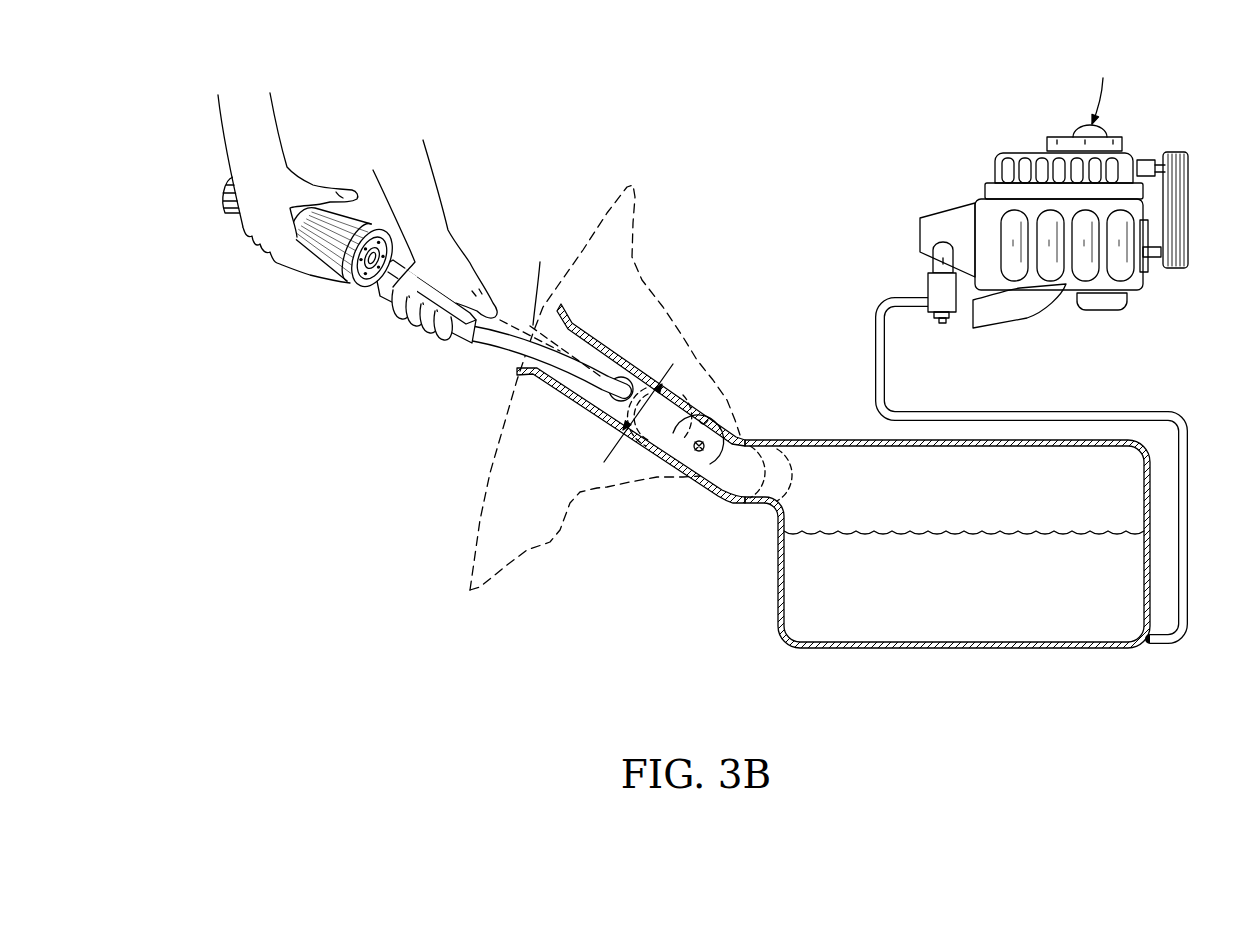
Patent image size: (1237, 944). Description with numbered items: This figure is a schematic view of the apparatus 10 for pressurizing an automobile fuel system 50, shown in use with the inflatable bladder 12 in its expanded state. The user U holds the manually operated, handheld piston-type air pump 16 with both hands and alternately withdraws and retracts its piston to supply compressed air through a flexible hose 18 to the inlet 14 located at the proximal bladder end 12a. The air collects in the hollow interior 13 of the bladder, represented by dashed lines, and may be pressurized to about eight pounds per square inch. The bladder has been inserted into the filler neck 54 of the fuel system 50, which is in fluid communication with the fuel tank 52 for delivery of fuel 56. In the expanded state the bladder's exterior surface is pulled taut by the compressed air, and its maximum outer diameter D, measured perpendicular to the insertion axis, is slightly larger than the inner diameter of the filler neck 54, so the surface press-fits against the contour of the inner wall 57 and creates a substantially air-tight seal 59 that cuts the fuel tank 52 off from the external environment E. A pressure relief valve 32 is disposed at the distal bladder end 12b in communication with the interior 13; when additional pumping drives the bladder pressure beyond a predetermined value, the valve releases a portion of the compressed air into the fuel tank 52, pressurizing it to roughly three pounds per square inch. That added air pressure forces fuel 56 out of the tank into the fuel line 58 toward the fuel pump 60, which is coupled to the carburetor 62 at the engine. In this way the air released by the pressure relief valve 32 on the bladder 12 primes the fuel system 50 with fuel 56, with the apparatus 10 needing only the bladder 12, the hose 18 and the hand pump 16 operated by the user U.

The apparatus 10 is at (516, 305).
The inflatable bladder 12 is at (657, 458).
The proximal bladder end 12a is at (645, 370).
The distal bladder end 12b is at (752, 440).
The hollow interior 13 is at (688, 470).
The inlet 14 is at (613, 405).
The air pump 16 is at (360, 290).
The hose 18 is at (565, 350).
The pressure relief valve 32 is at (703, 453).
The fuel system 50 is at (1182, 136).
The fuel tank 52 is at (826, 652).
The filler neck 54 is at (684, 385).
The fuel 56 is at (1062, 628).
The inner wall 57 is at (712, 426).
The fuel line 58 is at (1153, 411).
The substantially air-tight seal 59 is at (660, 444).
The fuel pump 60 is at (947, 298).
The carburetor 62 is at (1043, 139).
The user U is at (324, 224).
The external environment E is at (380, 587).
The maximum outer diameter D is at (645, 402).